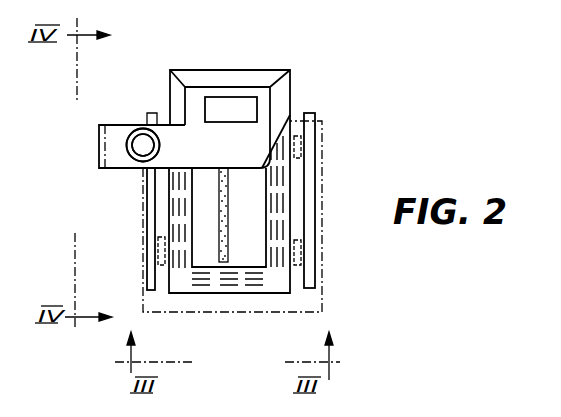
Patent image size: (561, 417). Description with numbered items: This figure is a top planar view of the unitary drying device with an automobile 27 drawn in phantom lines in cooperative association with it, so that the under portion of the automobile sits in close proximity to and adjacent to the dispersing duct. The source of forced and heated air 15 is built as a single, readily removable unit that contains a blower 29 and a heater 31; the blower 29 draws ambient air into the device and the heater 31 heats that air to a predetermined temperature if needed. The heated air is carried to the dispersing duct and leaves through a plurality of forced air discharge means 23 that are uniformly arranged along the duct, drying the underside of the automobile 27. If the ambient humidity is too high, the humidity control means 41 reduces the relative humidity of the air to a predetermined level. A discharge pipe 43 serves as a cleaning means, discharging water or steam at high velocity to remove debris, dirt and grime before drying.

The source of forced and heated air 15 is at (117, 142).
The forced air discharge means 23 is at (279, 205).
The automobile 27 is at (100, 155).
The blower 29 is at (138, 148).
The heater 31 is at (138, 148).
The humidity control means 41 is at (232, 105).
The discharge pipe 43 is at (228, 212).